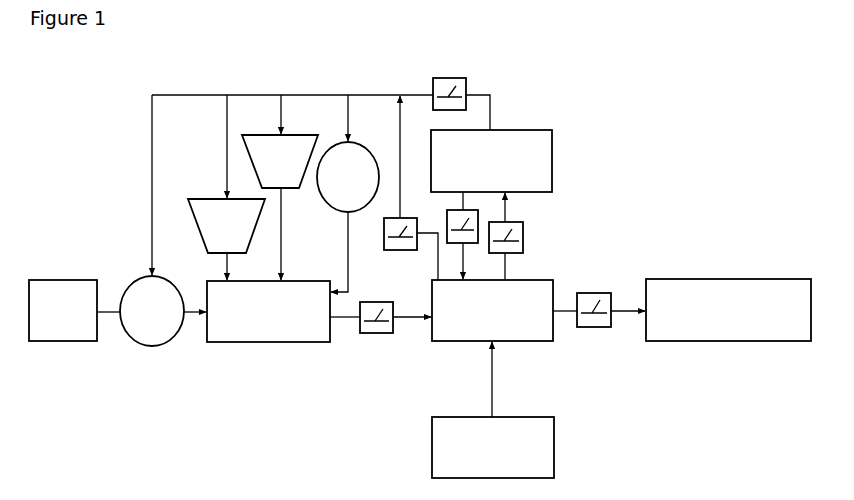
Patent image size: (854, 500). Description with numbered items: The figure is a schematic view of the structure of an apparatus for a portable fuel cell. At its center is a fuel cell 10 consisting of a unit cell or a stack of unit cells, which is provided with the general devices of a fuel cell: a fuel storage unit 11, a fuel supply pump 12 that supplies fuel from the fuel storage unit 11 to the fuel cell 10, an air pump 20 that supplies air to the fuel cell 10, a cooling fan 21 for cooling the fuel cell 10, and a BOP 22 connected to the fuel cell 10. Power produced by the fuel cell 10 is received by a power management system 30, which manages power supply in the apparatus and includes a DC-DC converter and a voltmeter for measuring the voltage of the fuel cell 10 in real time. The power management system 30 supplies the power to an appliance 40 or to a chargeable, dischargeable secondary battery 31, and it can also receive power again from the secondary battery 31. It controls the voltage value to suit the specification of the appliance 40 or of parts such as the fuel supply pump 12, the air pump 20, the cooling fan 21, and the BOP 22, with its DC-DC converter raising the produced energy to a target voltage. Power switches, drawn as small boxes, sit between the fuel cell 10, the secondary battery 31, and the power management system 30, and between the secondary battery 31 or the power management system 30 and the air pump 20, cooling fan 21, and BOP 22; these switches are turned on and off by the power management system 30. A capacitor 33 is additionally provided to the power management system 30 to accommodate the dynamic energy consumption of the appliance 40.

The fuel cell 10 is at (268, 311).
The fuel storage unit 11 is at (63, 310).
The fuel supply pump 12 is at (152, 311).
The air pump 20 is at (348, 177).
The cooling fan 21 is at (280, 161).
The BOP 22 is at (226, 226).
The power management system 30 is at (492, 310).
The secondary battery 31 is at (491, 161).
The capacitor 33 is at (493, 447).
The appliance 40 is at (728, 310).